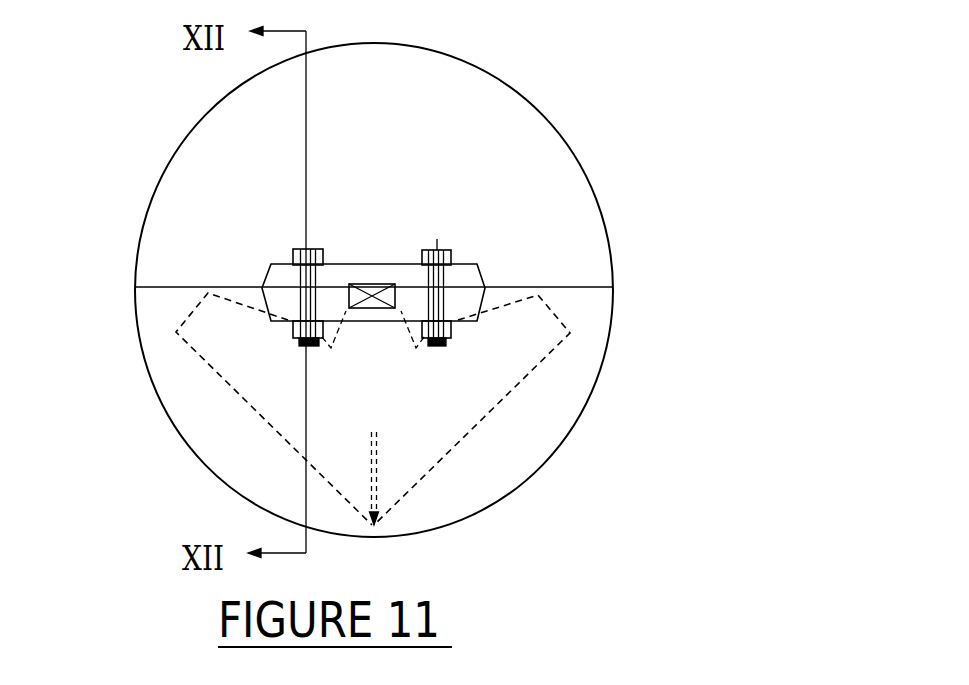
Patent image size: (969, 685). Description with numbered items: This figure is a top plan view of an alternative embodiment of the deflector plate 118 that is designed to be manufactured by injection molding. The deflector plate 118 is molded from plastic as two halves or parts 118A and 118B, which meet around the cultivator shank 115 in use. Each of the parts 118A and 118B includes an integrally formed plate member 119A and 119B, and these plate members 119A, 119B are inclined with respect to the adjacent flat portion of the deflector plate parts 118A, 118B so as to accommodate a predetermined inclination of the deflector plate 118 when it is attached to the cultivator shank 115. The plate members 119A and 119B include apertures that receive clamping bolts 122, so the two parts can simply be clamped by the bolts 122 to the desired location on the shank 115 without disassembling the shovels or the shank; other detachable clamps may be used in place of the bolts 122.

The cultivator shank 115 is at (352, 287).
The deflector plate 118 is at (595, 142).
The deflector plate part 118A is at (626, 259).
The deflector plate part 118B is at (622, 330).
The plate member 119A is at (465, 267).
The plate member 119B is at (353, 323).
The clamping bolts 122 is at (301, 344).